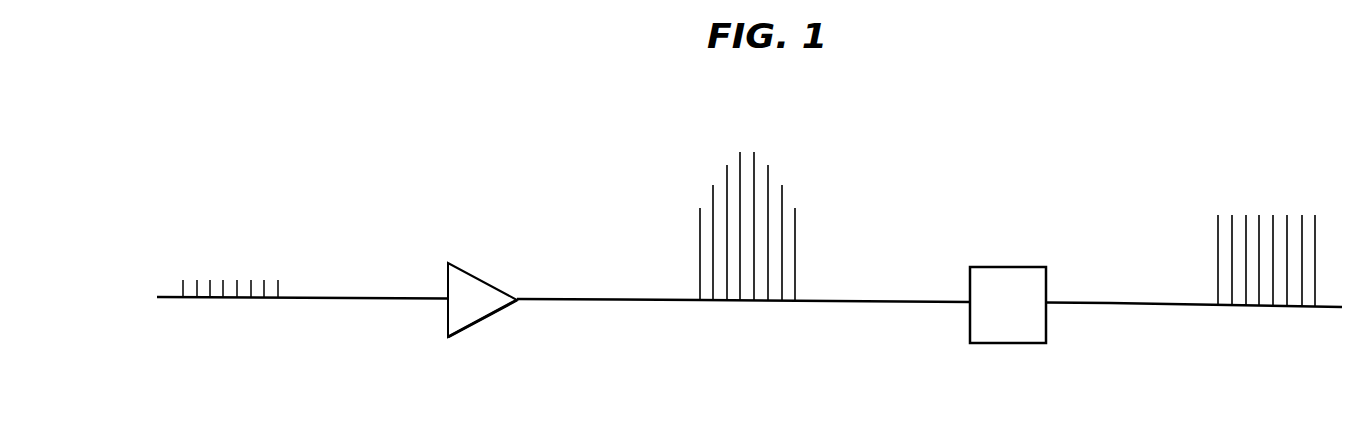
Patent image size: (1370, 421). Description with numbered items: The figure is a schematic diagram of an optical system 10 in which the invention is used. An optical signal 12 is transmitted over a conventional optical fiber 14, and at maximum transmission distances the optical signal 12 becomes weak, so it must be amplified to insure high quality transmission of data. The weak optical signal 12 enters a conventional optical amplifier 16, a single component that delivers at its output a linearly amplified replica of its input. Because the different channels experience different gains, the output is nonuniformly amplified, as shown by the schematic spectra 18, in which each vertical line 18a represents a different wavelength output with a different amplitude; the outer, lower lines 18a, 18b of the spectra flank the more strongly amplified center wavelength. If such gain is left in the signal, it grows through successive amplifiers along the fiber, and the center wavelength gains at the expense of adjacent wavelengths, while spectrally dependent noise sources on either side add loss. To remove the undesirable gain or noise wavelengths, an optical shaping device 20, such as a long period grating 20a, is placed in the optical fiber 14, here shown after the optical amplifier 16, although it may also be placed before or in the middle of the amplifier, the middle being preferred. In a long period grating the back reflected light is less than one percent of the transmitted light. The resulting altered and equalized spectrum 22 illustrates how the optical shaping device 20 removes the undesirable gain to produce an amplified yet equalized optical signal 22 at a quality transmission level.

The optical system 10 is at (302, 184).
The optical signal 12 is at (207, 278).
The optical fiber 14 is at (390, 300).
The optical amplifier 16 is at (502, 288).
The schematic spectra 18 is at (752, 122).
The different amplitudes 18a is at (730, 144).
The lower-gain portion of amplified signal 18b is at (767, 144).
The optical shaping device 20 is at (1029, 177).
The long period grating 20a is at (987, 320).
The equalized spectrum 22 is at (1288, 189).